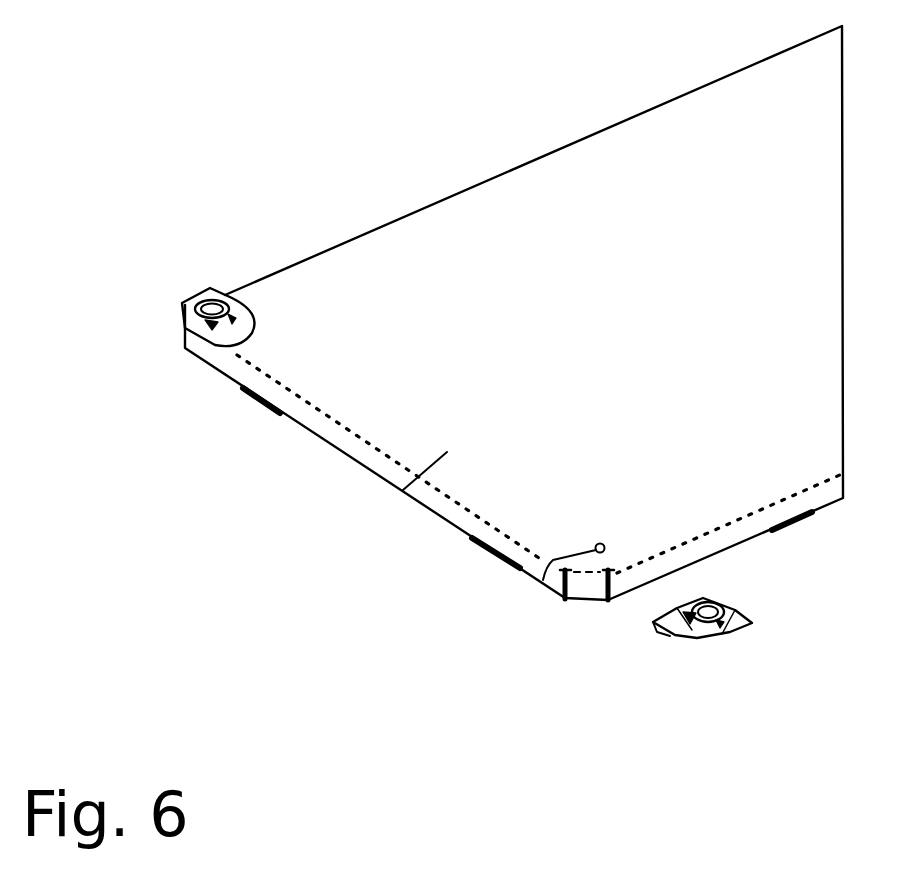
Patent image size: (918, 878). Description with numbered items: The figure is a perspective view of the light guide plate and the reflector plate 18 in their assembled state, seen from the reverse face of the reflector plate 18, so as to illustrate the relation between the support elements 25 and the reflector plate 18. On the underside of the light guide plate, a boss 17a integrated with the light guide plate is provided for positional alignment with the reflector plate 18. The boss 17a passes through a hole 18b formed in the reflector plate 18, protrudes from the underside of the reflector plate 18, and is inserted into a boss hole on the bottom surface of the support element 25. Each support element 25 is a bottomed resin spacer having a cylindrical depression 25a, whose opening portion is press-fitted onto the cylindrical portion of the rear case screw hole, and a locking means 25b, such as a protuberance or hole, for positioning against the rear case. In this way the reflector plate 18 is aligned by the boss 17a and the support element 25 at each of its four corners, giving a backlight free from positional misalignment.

The reflector plate 18 is at (403, 490).
The hole 18b is at (540, 581).
The boss 17a is at (596, 545).
The support element 25 is at (748, 624).
The cylindrical depression 25a is at (697, 638).
The locking means 25b is at (653, 622).